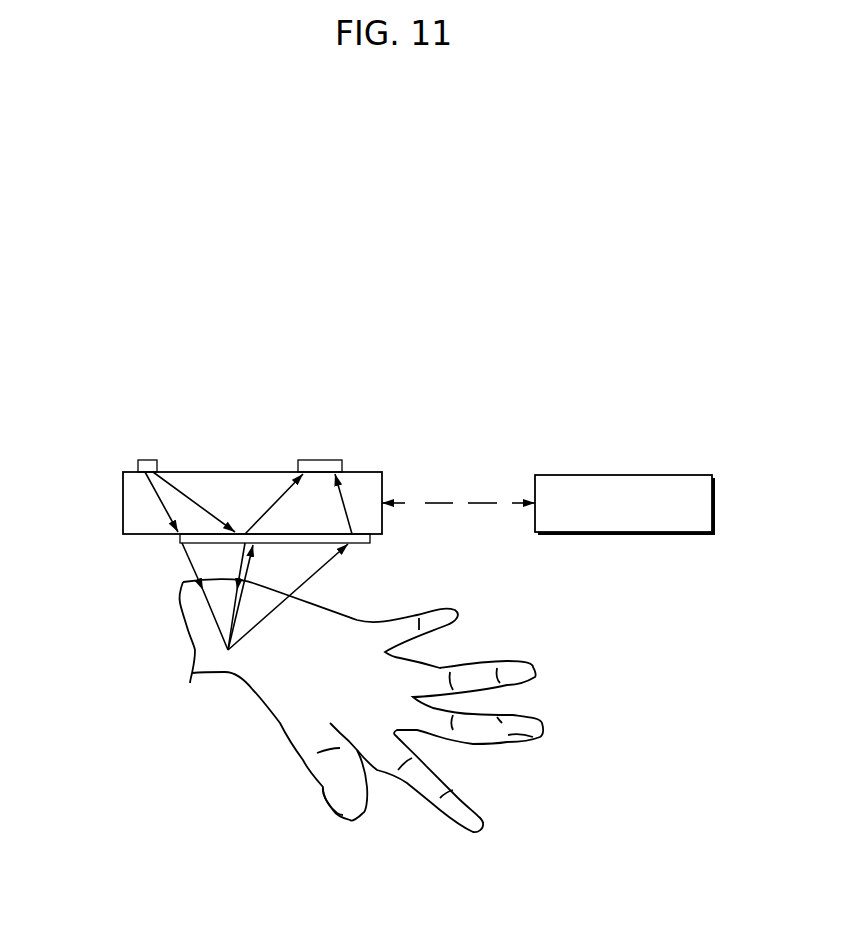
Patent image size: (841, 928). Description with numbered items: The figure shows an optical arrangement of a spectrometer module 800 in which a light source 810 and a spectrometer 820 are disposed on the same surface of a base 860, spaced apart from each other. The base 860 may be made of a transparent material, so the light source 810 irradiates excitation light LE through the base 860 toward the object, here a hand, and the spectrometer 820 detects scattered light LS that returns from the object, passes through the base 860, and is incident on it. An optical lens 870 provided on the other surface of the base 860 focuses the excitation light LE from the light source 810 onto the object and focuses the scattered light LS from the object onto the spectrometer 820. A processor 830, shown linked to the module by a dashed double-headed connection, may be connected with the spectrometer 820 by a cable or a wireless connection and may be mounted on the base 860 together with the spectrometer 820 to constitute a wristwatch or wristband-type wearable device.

The spectrometer module 800 is at (618, 312).
The light source 810 is at (150, 460).
The spectrometer 820 is at (322, 460).
The processor 830 is at (625, 475).
The base 860 is at (123, 503).
The optical lens 870 is at (180, 542).
The excitation light LE is at (198, 500).
The scattered light LS is at (327, 567).